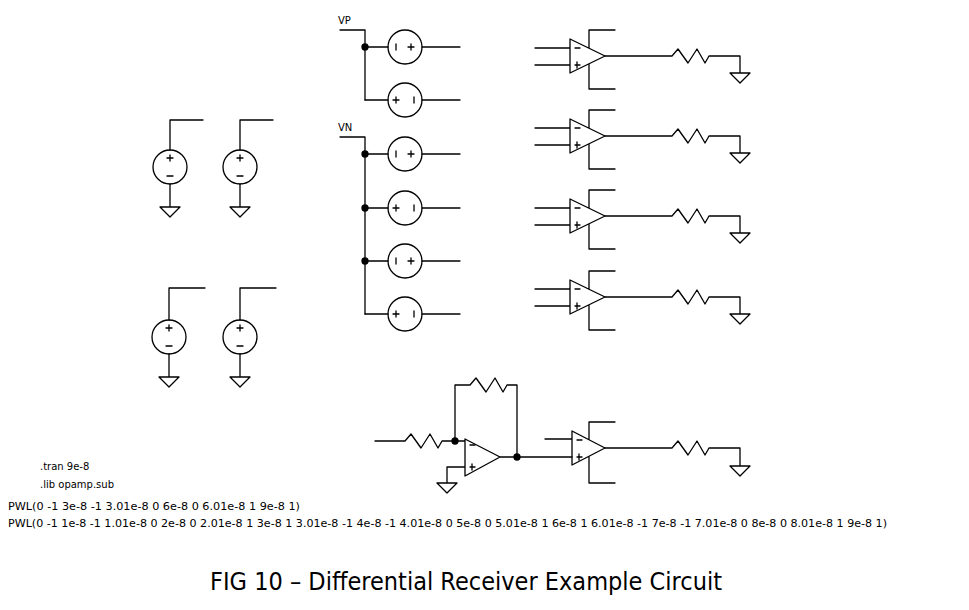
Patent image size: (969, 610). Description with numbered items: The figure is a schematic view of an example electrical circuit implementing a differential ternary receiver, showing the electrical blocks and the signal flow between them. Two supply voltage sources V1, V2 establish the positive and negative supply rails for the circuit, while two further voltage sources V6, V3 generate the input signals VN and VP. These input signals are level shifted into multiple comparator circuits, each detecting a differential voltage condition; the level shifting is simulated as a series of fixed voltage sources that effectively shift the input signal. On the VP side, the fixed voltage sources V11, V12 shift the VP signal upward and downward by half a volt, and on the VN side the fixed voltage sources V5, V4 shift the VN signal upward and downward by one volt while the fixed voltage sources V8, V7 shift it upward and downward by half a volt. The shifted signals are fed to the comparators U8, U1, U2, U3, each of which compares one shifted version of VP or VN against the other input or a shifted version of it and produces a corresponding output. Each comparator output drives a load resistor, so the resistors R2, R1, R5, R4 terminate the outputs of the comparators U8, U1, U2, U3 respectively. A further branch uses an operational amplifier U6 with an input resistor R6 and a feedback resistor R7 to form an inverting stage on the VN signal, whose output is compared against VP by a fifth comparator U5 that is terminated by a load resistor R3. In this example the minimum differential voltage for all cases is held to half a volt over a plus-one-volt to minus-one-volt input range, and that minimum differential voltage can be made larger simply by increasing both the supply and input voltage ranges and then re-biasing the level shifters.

The V+ supply voltage source (2V) V1 is at (178, 160).
The V- supply voltage source (-2V) V2 is at (248, 160).
The VN input voltage source V6 is at (178, 330).
The VP input voltage source V3 is at (249, 330).
The offset voltage source VP+0.5 V11 is at (413, 39).
The offset voltage source VP-0.5 V12 is at (412, 93).
The offset voltage source VN+1 V5 is at (411, 146).
The offset voltage source VN-1 V4 is at (411, 200).
The offset voltage source VN+0.5 V8 is at (412, 253).
The offset voltage source VN-0.5 V7 is at (413, 307).
The comparator LTC6752 (OUTA) U8 is at (581, 53).
The comparator LTC6752 (OUTB) U1 is at (581, 133).
The comparator LTC6752 (OUTC) U2 is at (581, 213).
The comparator LTC6752 (OUTD) U3 is at (581, 294).
The comparator LTC6752 (OUTE) U5 is at (591, 446).
The operational amplifier U6 is at (504, 463).
The load resistor 1K R1 is at (677, 139).
The load resistor 1K R2 is at (677, 59).
The load resistor 1K R3 is at (677, 452).
The load resistor 1K R4 is at (677, 300).
The load resistor 1K R5 is at (677, 219).
The input resistor 200 R6 is at (415, 432).
The feedback resistor 400 R7 is at (486, 419).